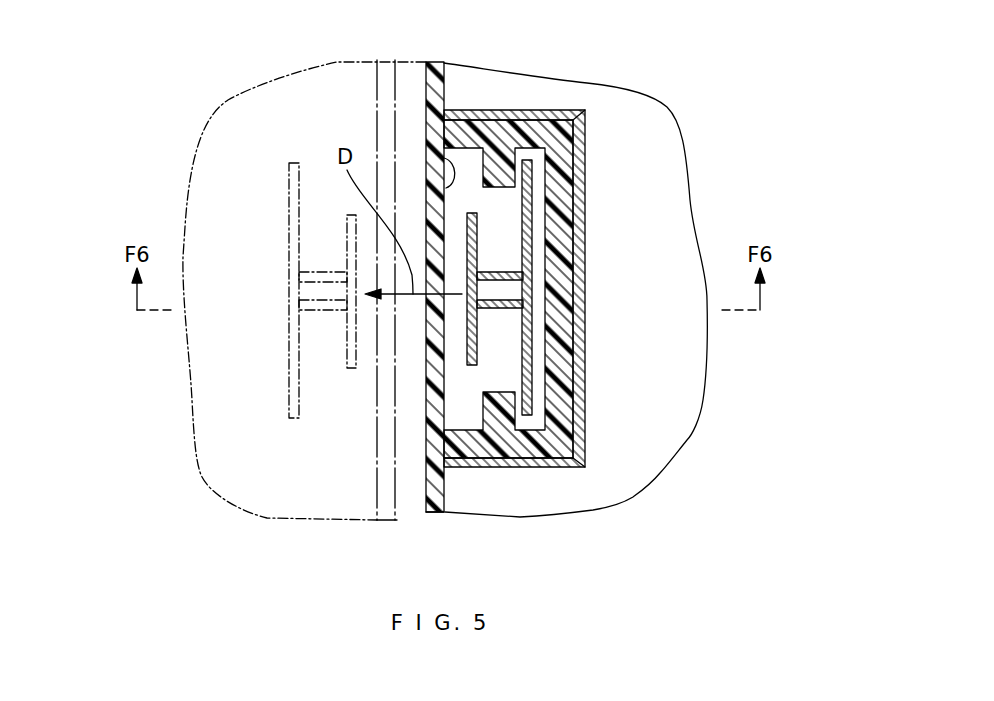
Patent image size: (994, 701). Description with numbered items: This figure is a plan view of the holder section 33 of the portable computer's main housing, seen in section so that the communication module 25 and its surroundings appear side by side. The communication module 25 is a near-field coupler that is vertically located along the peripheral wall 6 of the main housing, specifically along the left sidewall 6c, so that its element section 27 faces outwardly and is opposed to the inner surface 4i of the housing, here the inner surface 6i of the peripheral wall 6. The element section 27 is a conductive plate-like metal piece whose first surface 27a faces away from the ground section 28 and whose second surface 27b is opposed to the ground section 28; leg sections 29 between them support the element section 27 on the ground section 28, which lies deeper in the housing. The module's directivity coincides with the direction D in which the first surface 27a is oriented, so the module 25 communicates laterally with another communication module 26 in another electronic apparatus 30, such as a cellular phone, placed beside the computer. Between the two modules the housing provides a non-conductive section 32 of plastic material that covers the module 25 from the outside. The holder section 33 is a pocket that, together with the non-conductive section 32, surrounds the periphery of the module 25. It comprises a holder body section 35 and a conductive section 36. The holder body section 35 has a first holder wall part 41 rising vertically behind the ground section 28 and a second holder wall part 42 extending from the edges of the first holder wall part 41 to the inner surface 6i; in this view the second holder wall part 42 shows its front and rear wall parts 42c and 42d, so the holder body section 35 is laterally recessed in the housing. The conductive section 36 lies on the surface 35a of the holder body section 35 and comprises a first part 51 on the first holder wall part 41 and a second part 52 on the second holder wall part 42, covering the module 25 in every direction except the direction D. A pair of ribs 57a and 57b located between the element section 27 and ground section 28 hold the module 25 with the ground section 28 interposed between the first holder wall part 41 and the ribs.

The peripheral wall 6 is at (426, 63).
The left sidewall 6c is at (435, 477).
The inner surface of the main housing 4i is at (444, 160).
The inner surface of the peripheral wall 6i is at (449, 173).
The communication module 25 is at (549, 213).
The other communication module 26 is at (289, 375).
The element section 27 is at (470, 331).
The first surface 27a is at (467, 349).
The second surface 27b is at (470, 331).
The ground section 28 is at (527, 258).
The leg section 29 is at (510, 310).
The electronic apparatus 30 is at (220, 500).
The non-conductive section 32 is at (435, 392).
The holder section 33 is at (603, 310).
The holder body section 35 is at (586, 418).
The surface of the holder body section 35a is at (578, 148).
The conductive section 36 is at (580, 287).
The first holder wall part 41 is at (565, 178).
The second holder wall part 42 is at (517, 127).
The front wall part 42c is at (533, 447).
The rear wall part 42d is at (488, 132).
The first part 51 is at (580, 385).
The second part 52 is at (473, 462).
The rib 57a is at (498, 165).
The rib 57b is at (500, 410).